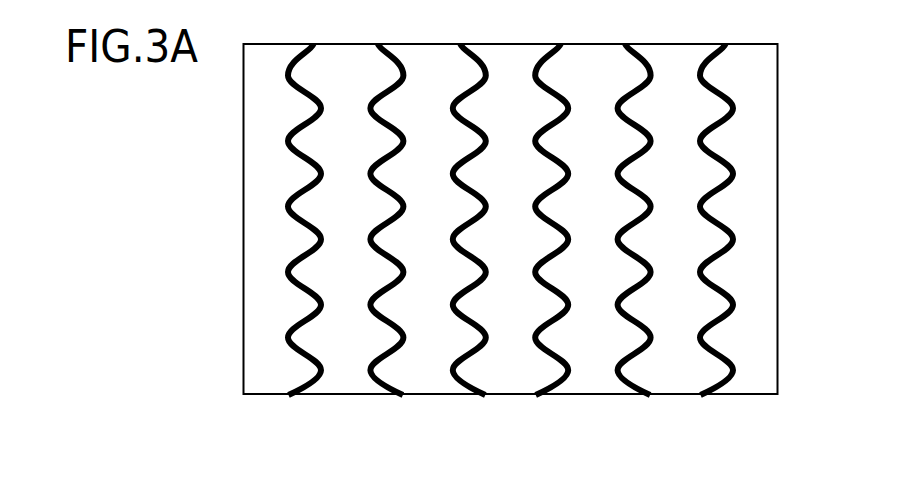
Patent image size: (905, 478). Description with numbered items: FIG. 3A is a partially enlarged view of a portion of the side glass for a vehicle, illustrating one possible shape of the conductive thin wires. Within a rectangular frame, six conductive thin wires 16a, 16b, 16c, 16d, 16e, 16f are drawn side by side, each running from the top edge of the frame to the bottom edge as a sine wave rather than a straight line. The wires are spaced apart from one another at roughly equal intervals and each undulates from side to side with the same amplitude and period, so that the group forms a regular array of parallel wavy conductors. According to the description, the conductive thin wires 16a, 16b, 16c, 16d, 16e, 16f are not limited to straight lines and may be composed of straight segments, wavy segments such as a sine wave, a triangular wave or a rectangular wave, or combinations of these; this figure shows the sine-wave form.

The conductive thin wire 16a is at (313, 380).
The conductive thin wire 16b is at (380, 380).
The conductive thin wire 16c is at (463, 380).
The conductive thin wire 16d is at (560, 380).
The conductive thin wire 16e is at (628, 377).
The conductive thin wire 16f is at (723, 380).